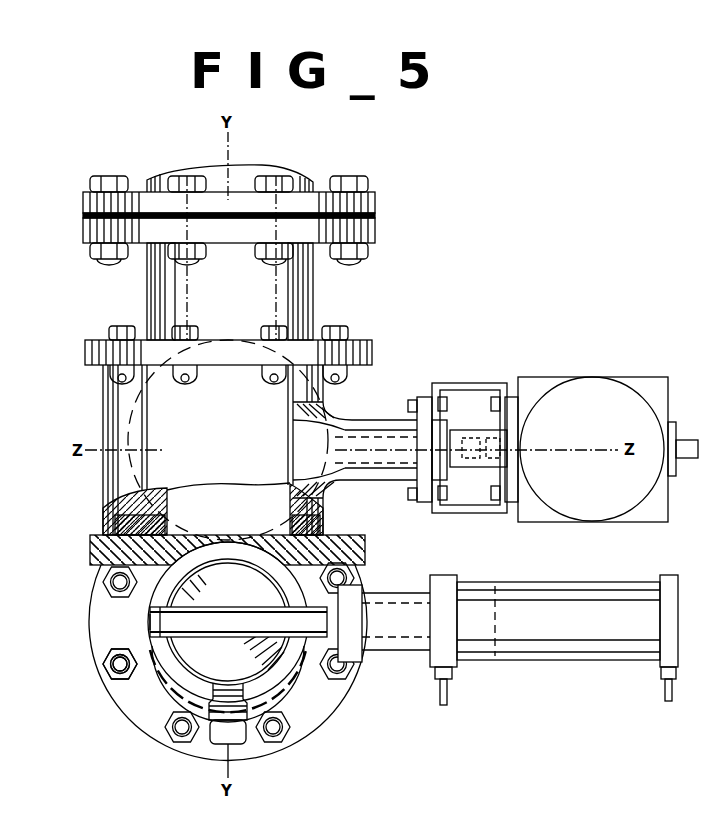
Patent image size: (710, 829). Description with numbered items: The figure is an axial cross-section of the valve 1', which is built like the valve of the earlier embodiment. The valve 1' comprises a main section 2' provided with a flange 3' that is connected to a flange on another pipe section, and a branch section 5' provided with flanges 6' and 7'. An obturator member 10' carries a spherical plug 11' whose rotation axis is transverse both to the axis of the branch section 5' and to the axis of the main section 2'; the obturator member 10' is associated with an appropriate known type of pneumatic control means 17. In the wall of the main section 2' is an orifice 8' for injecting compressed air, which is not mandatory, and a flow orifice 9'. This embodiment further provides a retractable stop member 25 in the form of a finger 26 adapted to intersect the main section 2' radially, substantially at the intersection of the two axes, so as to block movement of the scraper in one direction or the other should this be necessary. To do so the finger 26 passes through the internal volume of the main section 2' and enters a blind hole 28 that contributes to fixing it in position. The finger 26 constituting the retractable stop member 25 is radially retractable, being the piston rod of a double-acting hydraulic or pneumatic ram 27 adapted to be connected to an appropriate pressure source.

The valve 1' is at (313, 391).
The main section 2' is at (197, 644).
The flange 3' is at (200, 661).
The branch section 5' is at (262, 291).
The flange 6' is at (261, 252).
The flange 7' is at (246, 349).
The orifice 8' is at (260, 713).
The flow orifice 9' is at (227, 537).
The obturator member 10' is at (222, 450).
The spherical plug 11' is at (213, 494).
The pneumatic control means 17 is at (585, 378).
The retractable stop member 25 is at (148, 620).
The finger 26 is at (330, 619).
The double-acting hydraulic or pneumatic ram 27 is at (577, 633).
The blind hole 28 is at (132, 637).